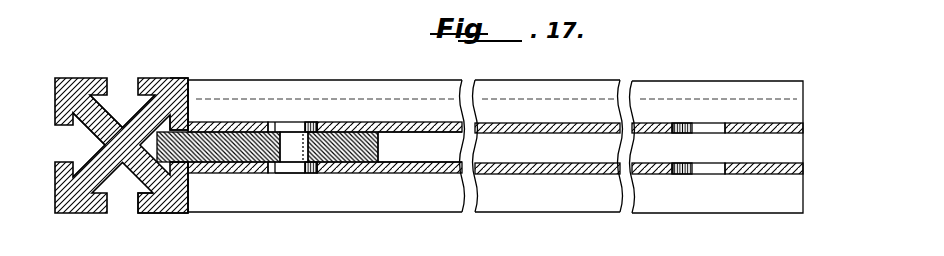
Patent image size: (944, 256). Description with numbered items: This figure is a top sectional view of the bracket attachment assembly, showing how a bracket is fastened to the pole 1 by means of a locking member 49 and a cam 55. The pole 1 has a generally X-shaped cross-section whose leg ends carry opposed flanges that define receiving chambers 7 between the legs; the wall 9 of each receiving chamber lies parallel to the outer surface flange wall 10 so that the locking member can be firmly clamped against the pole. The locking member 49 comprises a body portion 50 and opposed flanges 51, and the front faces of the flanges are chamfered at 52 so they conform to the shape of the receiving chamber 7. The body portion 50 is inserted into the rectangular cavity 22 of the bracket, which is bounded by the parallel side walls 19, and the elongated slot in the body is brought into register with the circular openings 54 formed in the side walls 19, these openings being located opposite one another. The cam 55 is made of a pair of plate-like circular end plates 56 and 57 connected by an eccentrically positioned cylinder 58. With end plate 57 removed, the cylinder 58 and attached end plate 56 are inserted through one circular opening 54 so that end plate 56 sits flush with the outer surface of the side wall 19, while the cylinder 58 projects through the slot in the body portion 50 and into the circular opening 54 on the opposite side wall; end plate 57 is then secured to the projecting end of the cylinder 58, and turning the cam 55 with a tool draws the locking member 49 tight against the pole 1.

The pole 1 is at (166, 74).
The receiving chamber 7 is at (140, 147).
The wall of the receiving chamber 9 is at (167, 170).
The outer surface flange wall 10 is at (189, 186).
The side wall 19 is at (530, 175).
The cavity 22 is at (407, 148).
The locking member 49 is at (347, 138).
The body portion 50 is at (231, 128).
The flange 51 is at (179, 122).
The chamfer 52 is at (150, 110).
The circular opening 54 is at (271, 127).
The cam 55 is at (287, 184).
The end plate 56 is at (298, 130).
The end plate 57 is at (270, 172).
The eccentric cylinder 58 is at (299, 160).